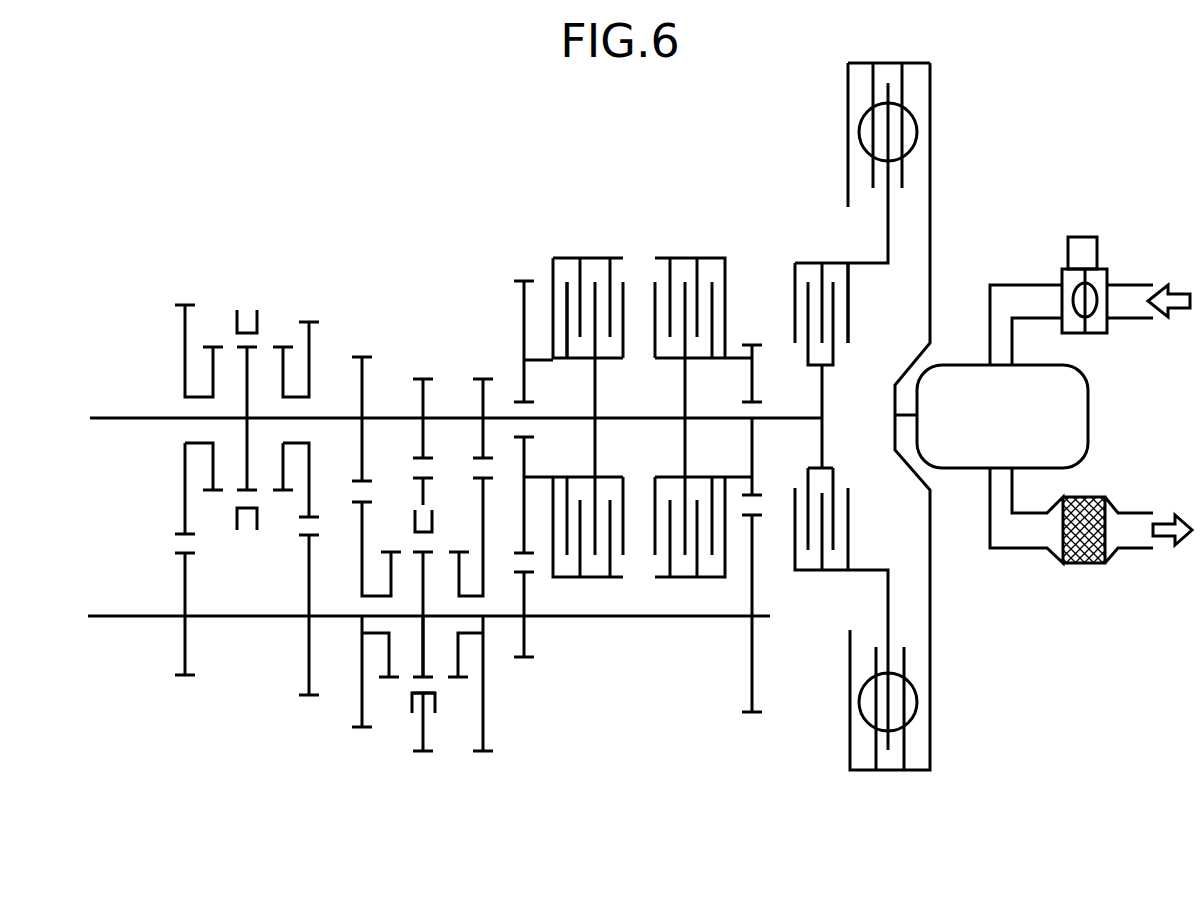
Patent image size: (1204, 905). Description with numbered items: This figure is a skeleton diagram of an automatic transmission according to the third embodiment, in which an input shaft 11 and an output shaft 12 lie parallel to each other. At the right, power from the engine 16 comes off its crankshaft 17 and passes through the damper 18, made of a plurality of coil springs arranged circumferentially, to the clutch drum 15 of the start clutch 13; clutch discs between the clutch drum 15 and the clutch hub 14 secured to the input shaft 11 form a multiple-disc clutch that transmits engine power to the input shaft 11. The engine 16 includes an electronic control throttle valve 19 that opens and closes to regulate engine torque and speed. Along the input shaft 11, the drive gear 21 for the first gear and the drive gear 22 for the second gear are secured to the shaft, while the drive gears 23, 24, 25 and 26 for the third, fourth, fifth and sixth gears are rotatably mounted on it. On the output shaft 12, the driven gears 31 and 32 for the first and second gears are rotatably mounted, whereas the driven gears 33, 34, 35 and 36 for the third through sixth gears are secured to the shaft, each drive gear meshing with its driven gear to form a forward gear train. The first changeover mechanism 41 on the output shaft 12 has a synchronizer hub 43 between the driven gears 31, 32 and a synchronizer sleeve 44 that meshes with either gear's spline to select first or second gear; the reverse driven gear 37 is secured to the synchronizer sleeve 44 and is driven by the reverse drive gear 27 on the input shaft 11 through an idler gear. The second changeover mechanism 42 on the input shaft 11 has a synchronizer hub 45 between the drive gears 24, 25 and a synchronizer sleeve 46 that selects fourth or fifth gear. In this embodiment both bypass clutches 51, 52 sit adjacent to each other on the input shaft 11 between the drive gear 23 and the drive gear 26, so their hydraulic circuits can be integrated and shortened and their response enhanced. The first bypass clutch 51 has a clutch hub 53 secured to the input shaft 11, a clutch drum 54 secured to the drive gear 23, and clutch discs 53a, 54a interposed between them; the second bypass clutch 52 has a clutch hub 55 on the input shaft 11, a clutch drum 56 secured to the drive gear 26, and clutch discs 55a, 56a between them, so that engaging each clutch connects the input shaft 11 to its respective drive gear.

The input shaft 11 is at (778, 412).
The output shaft 12 is at (557, 618).
The start clutch 13 is at (806, 258).
The clutch hub 14 is at (826, 447).
The clutch drum 15 is at (865, 265).
The engine 16 is at (1075, 410).
The crankshaft 17 is at (905, 420).
The damper 18 is at (920, 130).
The electronic control throttle valve 19 is at (1110, 247).
The drive gear for the first gear 21 is at (478, 378).
The drive gear for the second gear 22 is at (368, 357).
The drive gear for the third gear 23 is at (767, 343).
The drive gear for the fourth gear 24 is at (300, 320).
The drive gear for the fifth gear 25 is at (196, 302).
The drive gear for the sixth gear 26 is at (520, 300).
The reverse drive gear 27 is at (432, 378).
The driven gear for the first gear 31 is at (483, 753).
The driven gear for the second gear 32 is at (362, 729).
The driven gear for the third gear 33 is at (752, 714).
The driven gear for the fourth gear 34 is at (309, 697).
The driven gear for the fifth gear 35 is at (185, 677).
The driven gear for the sixth gear 36 is at (524, 659).
The reverse driven gear 37 is at (423, 753).
The first changeover mechanism 41 is at (410, 732).
The second changeover mechanism 42 is at (247, 532).
The synchronizer hub 43 is at (430, 662).
The synchronizer sleeve 44 is at (412, 695).
The synchronizer hub 45 is at (252, 455).
The synchronizer sleeve 46 is at (247, 310).
The first bypass clutch 51 is at (703, 248).
The second bypass clutch 52 is at (596, 242).
The clutch hub 53 is at (657, 360).
The clutch discs 53a is at (655, 548).
The clutch drum 54 is at (682, 258).
The clutch discs 54a is at (697, 560).
The clutch hub 55 is at (575, 360).
The clutch discs 55a is at (623, 548).
The clutch drum 56 is at (567, 258).
The clutch discs 56a is at (615, 272).